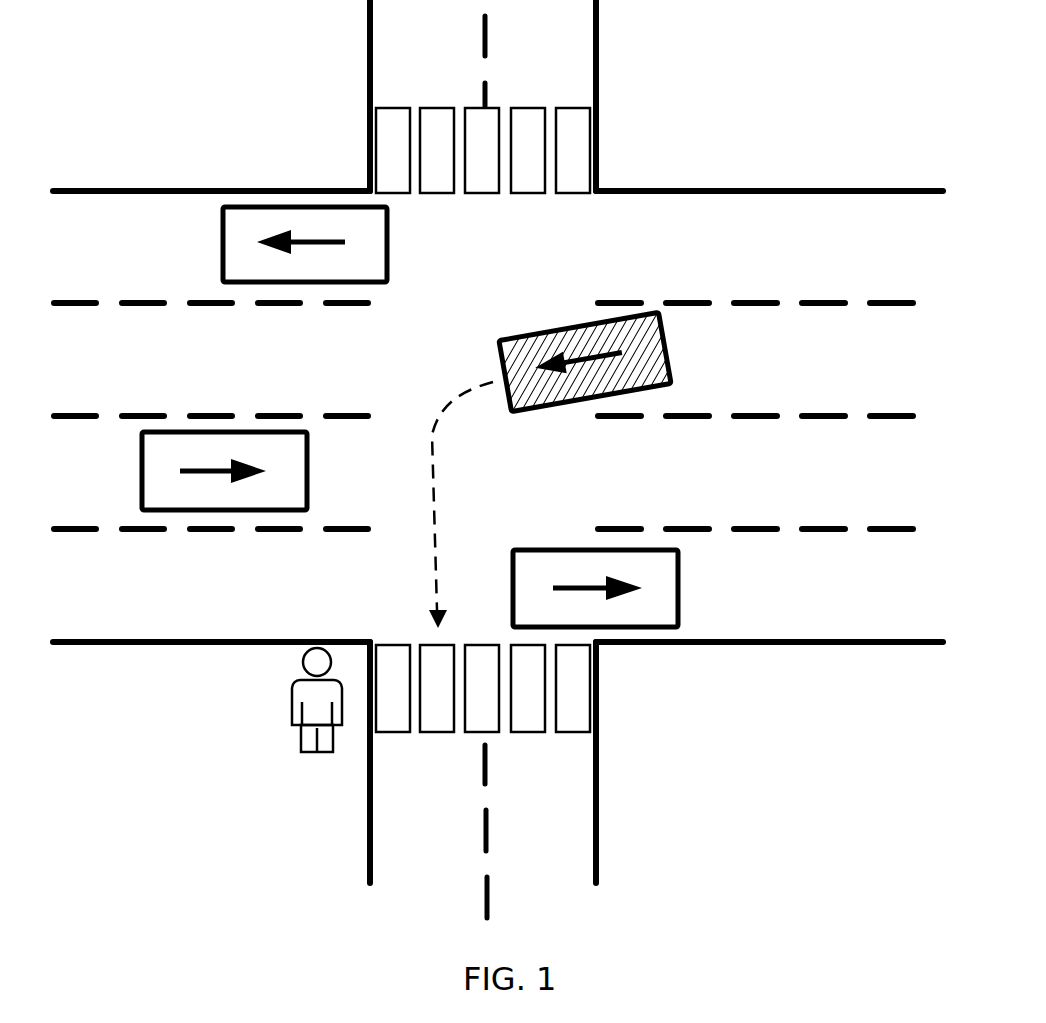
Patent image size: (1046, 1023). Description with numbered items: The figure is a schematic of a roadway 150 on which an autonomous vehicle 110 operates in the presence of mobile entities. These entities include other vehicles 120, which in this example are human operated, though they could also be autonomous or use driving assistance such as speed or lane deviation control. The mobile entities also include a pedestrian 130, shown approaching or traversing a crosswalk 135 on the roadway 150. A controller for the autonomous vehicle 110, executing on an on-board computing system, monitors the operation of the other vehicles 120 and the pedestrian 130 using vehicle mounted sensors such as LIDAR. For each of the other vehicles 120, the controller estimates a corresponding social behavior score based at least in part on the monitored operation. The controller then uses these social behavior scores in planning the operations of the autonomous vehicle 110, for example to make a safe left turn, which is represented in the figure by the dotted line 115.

The autonomous vehicle 110 is at (550, 330).
The dotted line 115 is at (434, 569).
The other vehicles 120 is at (218, 237).
The pedestrian 130 is at (288, 703).
The crosswalk 135 is at (577, 712).
The roadway 150 is at (693, 668).